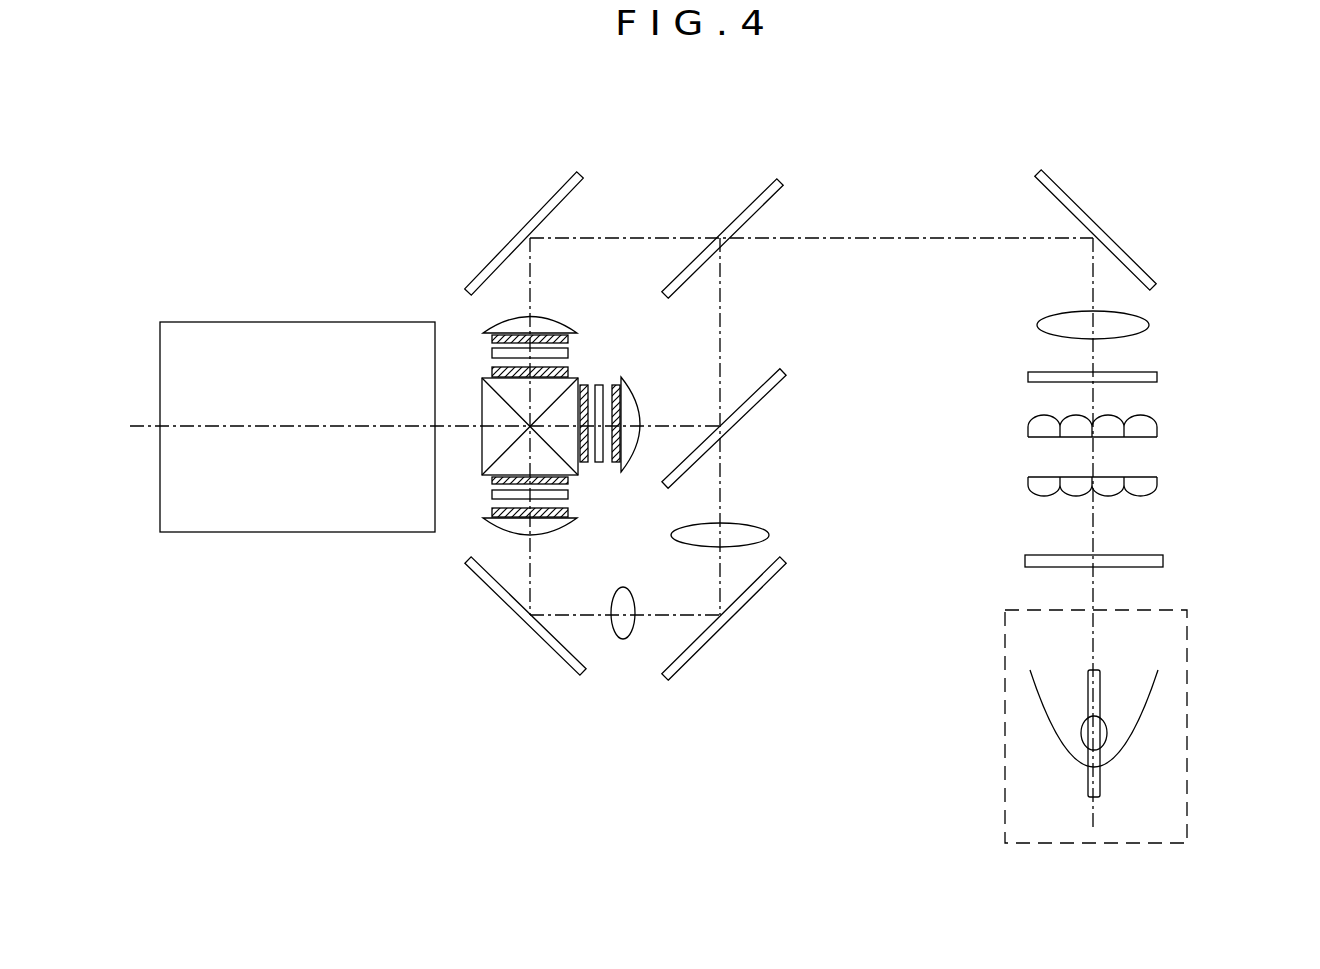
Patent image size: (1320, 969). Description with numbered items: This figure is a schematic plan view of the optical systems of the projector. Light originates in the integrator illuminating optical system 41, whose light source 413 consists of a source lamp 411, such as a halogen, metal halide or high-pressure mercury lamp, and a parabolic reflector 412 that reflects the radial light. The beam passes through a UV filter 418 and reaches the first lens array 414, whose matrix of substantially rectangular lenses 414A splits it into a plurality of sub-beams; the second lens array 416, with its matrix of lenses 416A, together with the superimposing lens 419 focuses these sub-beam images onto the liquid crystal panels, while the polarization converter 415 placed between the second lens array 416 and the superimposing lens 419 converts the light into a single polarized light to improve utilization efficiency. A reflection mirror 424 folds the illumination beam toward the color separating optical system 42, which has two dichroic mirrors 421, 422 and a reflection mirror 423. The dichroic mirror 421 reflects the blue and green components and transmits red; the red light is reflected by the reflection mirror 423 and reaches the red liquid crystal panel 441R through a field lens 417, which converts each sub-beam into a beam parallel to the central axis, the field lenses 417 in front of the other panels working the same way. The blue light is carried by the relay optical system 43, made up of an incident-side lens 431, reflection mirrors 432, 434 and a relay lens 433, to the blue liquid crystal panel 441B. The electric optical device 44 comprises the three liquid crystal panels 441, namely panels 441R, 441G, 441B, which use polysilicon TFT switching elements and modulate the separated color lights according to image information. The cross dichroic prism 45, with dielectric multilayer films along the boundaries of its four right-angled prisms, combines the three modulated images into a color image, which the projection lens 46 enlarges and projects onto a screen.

The integrator illuminating optical system 41 is at (1067, 725).
The source lamp 411 is at (1088, 693).
The reflector 412 is at (1060, 750).
The light source 413 is at (1004, 747).
The first lens array 414 is at (1106, 506).
The lenses 414A is at (1078, 482).
The polarization converter 415 is at (1160, 378).
The second lens array 416 is at (1101, 415).
The lenses 416A is at (1078, 432).
The field lens 417 is at (492, 328).
The UV filter 418 is at (1163, 561).
The superimposing lens 419 is at (1150, 325).
The color separating optical system 42 is at (810, 295).
The dichroic mirror 421 is at (752, 197).
The dichroic mirror 422 is at (774, 372).
The reflection mirror 423 is at (547, 197).
The reflection mirror 424 is at (1073, 195).
The relay optical system 43 is at (659, 626).
The incident-side lens 431 is at (748, 530).
The reflection mirror 432 is at (704, 648).
The relay lens 433 is at (625, 640).
The reflection mirror 434 is at (562, 660).
The electric optical device 44 is at (490, 434).
The liquid crystal panels 441 is at (464, 435).
The liquid crystal panel for red 441R is at (492, 352).
The liquid crystal panel for green 441G is at (600, 388).
The liquid crystal panel for blue 441B is at (490, 500).
The cross dichroic prism 45 is at (492, 438).
The projection lens 46 is at (205, 322).